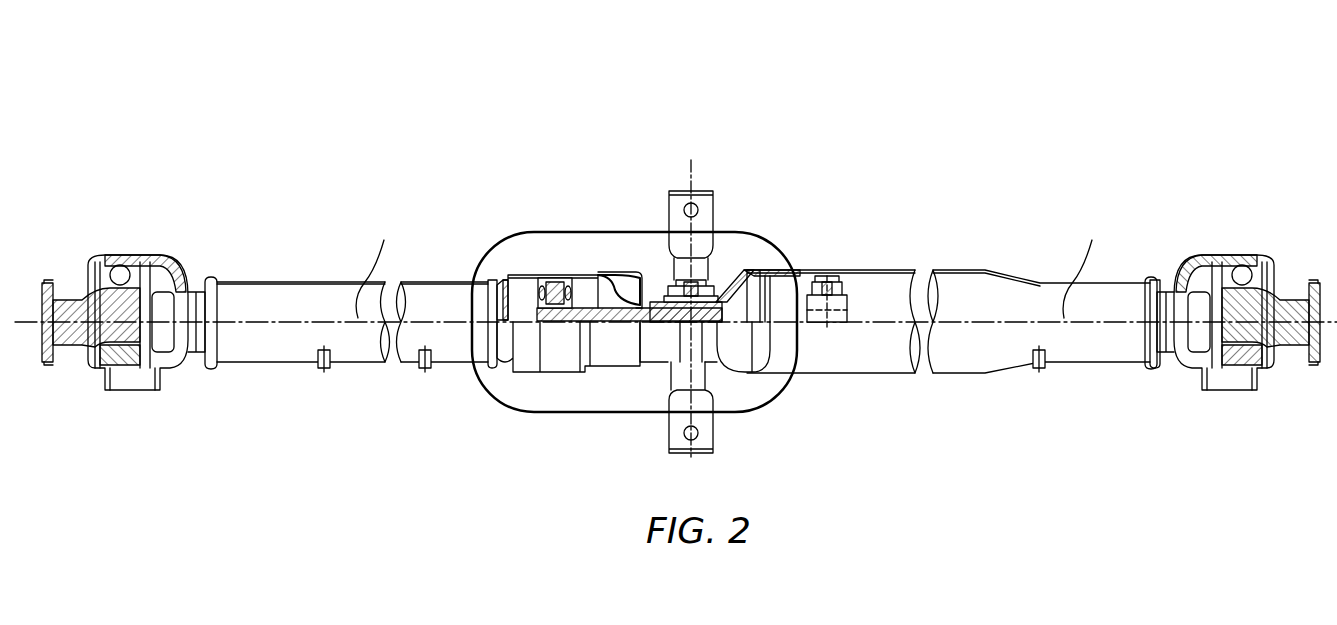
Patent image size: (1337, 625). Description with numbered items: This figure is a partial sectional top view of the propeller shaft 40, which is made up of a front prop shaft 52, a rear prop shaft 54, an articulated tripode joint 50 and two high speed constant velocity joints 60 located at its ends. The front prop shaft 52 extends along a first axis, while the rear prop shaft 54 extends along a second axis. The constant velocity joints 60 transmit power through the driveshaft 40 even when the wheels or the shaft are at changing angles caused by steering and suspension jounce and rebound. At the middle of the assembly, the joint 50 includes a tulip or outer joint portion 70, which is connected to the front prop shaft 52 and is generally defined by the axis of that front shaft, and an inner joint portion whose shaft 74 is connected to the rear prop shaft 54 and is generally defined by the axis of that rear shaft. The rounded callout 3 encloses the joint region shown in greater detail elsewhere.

The propeller shaft 40 is at (622, 99).
The high speed constant velocity joint 60 is at (171, 245).
The front prop shaft 52 is at (316, 300).
The rear prop shaft 54 is at (960, 294).
The articulated tripode joint 50 is at (586, 244).
The section detail callout (FIG. 3) 3 is at (497, 246).
The outer joint portion 70 is at (533, 277).
The shaft 74 is at (731, 268).